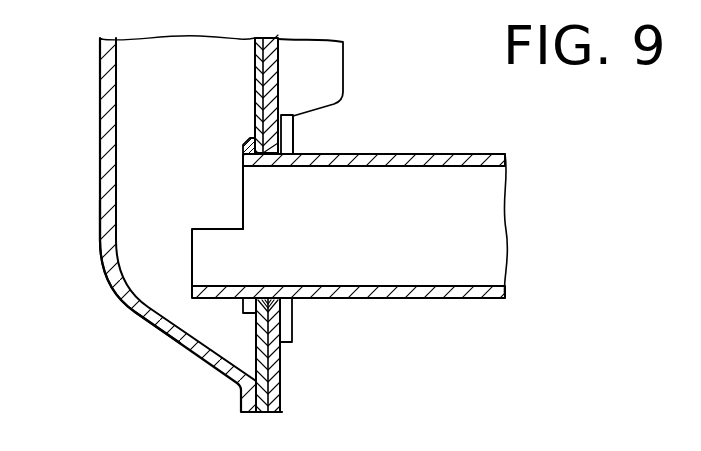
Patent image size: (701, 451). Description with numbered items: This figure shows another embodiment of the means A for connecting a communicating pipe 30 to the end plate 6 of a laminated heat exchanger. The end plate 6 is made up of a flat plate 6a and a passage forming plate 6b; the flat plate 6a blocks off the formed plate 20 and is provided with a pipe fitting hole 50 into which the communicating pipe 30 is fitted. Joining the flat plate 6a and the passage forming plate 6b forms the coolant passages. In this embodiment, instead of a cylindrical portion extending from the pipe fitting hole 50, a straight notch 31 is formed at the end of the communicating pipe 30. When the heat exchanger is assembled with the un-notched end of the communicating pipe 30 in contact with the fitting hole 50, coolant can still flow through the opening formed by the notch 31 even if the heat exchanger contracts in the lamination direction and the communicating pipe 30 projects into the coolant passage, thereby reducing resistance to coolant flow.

The end plate 6 is at (92, 135).
The flat plate 6a is at (290, 125).
The passage forming plate 6b is at (100, 241).
The formed plate 20 is at (272, 53).
The communicating pipe 30 is at (435, 293).
The straight notch 31 is at (243, 197).
The pipe fitting hole 50 is at (270, 308).
The means for connecting the communicating pipe to the end plate A is at (216, 208).